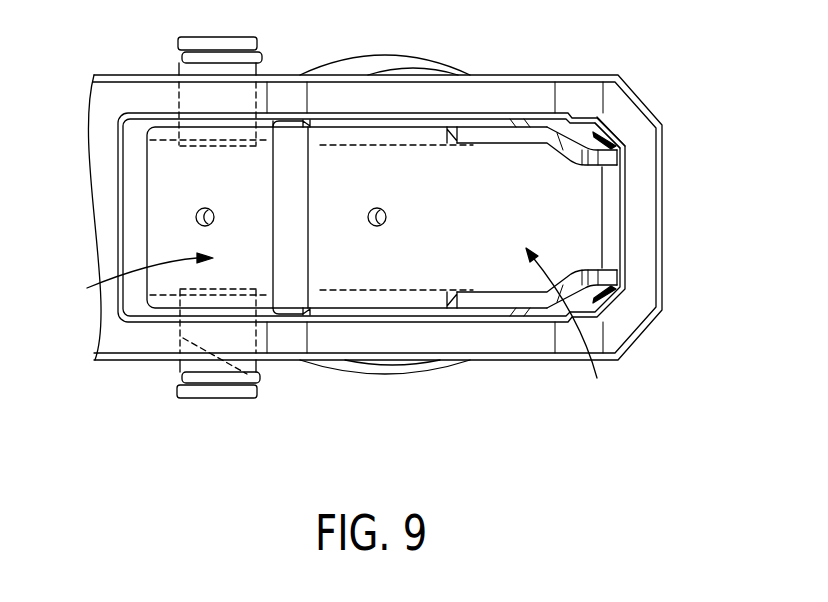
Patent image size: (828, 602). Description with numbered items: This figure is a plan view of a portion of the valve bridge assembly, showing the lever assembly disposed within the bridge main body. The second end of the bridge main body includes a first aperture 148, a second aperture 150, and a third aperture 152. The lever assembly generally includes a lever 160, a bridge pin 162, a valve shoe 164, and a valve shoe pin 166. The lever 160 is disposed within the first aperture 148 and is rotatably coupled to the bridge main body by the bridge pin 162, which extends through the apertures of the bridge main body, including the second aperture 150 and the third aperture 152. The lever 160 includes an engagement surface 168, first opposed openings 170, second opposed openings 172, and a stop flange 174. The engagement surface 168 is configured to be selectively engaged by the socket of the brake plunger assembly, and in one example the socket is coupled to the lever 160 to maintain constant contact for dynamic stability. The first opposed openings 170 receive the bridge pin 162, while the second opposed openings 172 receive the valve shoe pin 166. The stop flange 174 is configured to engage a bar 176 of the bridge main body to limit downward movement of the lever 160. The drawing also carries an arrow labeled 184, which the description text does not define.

The first aperture 148 is at (606, 147).
The second aperture 150 is at (262, 381).
The third aperture 152 is at (195, 133).
The lever 160 is at (290, 161).
The bridge pin 162 is at (225, 398).
The valve shoe 164 is at (398, 374).
The valve shoe pin 166 is at (433, 315).
The engagement surface 168 is at (568, 327).
The first opposed openings 170 is at (132, 126).
The second opposed openings 172 is at (355, 127).
The stop flange 174 is at (583, 190).
The bar 176 is at (640, 227).
The insertion direction arrow 184 is at (134, 278).